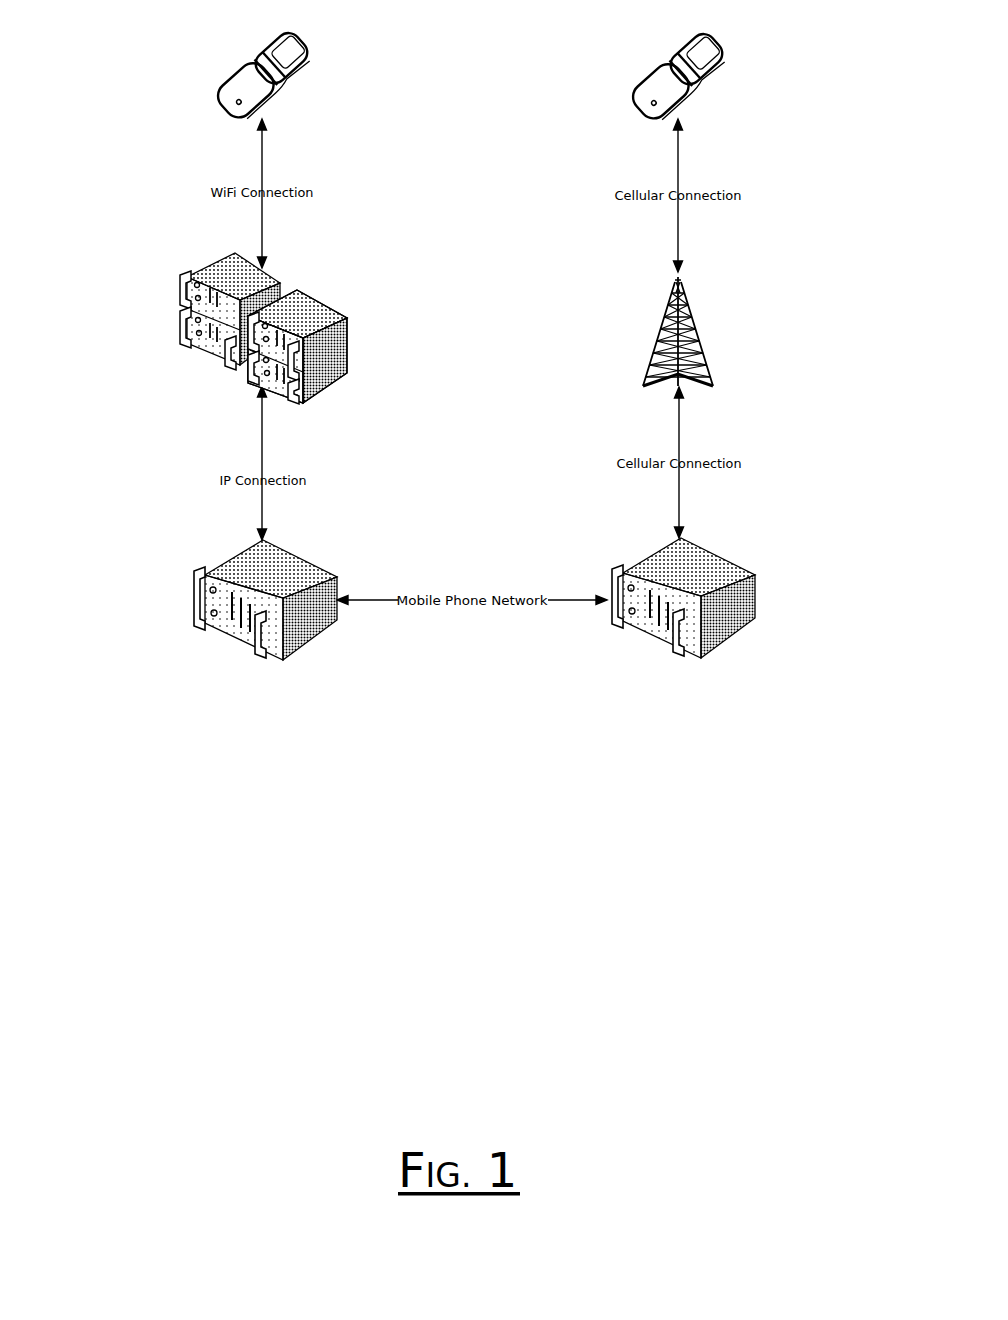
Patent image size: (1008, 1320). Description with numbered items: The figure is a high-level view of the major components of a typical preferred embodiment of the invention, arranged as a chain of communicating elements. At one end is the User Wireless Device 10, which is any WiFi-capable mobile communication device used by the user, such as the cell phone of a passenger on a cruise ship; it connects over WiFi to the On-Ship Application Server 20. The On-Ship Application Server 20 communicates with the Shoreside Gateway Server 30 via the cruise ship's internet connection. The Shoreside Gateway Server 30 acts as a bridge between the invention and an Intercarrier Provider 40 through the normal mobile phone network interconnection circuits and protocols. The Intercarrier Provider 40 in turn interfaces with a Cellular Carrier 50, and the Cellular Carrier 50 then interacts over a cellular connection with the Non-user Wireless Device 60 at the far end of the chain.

The user wireless device 10 is at (221, 93).
The on-ship application server 20 is at (230, 312).
The shoreside gateway server 30 is at (233, 582).
The intercarrier provider 40 is at (693, 609).
The cellular carrier 50 is at (703, 355).
The non-user wireless device 60 is at (692, 102).